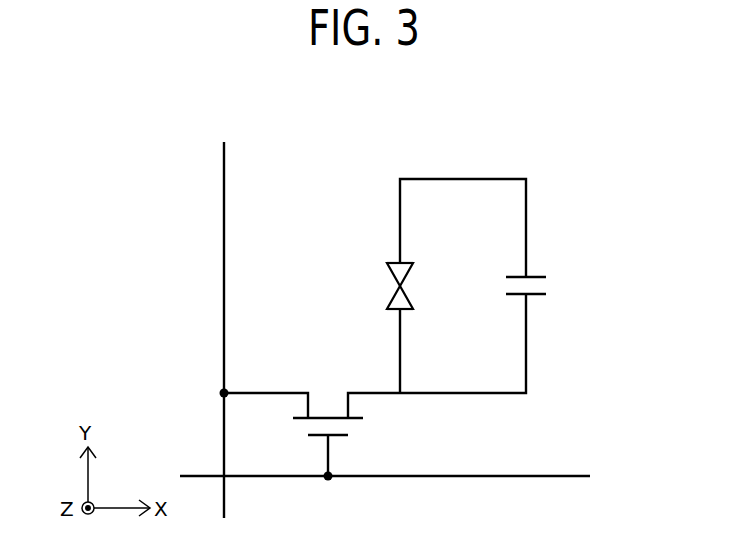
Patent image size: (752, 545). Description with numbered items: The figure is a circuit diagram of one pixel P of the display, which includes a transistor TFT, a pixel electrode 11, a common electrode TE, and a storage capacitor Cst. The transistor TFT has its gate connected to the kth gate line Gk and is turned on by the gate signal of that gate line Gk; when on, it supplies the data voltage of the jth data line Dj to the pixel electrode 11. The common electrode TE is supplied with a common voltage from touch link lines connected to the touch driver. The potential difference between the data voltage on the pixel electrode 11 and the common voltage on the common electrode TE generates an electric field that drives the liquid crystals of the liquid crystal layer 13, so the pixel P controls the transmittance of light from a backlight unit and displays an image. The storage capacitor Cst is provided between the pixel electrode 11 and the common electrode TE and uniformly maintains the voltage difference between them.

The jth data line Dj is at (224, 183).
The kth gate line Gk is at (463, 477).
The transistor TFT is at (314, 435).
The pixel P is at (543, 152).
The liquid crystal layer 13 is at (403, 286).
The common electrode TE is at (398, 265).
The pixel electrode 11 is at (393, 309).
The storage capacitor Cst is at (545, 287).